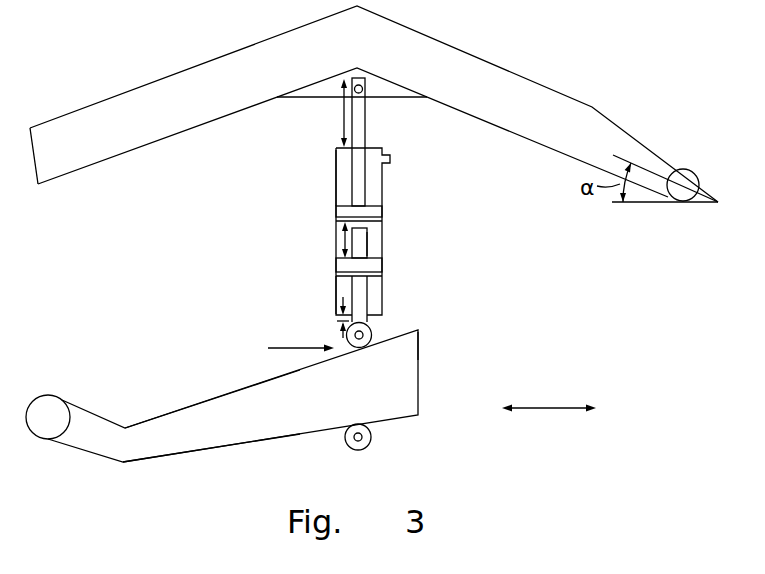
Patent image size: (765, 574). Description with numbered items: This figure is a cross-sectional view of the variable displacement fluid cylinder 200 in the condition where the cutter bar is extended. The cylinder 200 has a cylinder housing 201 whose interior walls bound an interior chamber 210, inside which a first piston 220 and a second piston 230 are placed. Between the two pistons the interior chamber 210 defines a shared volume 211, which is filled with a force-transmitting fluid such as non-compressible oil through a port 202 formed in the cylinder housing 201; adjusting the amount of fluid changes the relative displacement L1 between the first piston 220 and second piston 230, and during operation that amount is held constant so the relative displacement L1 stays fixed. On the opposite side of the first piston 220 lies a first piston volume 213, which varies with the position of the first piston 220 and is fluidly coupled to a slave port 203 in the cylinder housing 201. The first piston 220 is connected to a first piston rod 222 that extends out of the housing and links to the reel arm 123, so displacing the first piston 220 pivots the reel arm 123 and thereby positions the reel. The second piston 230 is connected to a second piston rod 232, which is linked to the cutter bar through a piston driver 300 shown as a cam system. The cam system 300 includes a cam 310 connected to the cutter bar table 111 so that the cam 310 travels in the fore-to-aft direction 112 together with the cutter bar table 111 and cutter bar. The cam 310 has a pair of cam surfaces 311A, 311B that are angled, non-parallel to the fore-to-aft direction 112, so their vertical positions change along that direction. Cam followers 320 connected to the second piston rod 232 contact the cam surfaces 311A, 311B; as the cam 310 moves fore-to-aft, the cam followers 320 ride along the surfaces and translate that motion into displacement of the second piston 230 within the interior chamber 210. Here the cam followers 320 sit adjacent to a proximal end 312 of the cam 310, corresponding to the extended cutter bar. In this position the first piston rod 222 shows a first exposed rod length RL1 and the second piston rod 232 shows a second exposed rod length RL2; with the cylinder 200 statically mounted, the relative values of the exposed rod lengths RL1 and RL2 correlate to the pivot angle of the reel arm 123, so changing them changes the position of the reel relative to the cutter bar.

The reel arm 123 is at (522, 78).
The variable displacement fluid cylinder 200 is at (318, 205).
The cylinder housing 201 is at (336, 288).
The port 202 is at (375, 233).
The slave port 203 is at (390, 160).
The interior chamber 210 is at (386, 220).
The shared volume 211 is at (375, 250).
The first piston volume 213 is at (343, 181).
The first piston 220 is at (383, 210).
The first piston rod 222 is at (366, 120).
The second piston 230 is at (382, 272).
The second piston rod 232 is at (365, 307).
The first exposed rod length RL1 is at (342, 115).
The second exposed rod length RL2 is at (343, 320).
The relative displacement L1 is at (342, 237).
The piston driver 300 is at (284, 346).
The cam 310 is at (420, 382).
The cam surface 311A is at (225, 395).
The cam surface 311B is at (182, 453).
The proximal end 312 is at (422, 348).
The cam followers 320 is at (371, 330).
The cutter bar table 111 is at (127, 427).
The fore-to-aft direction 112 is at (545, 410).